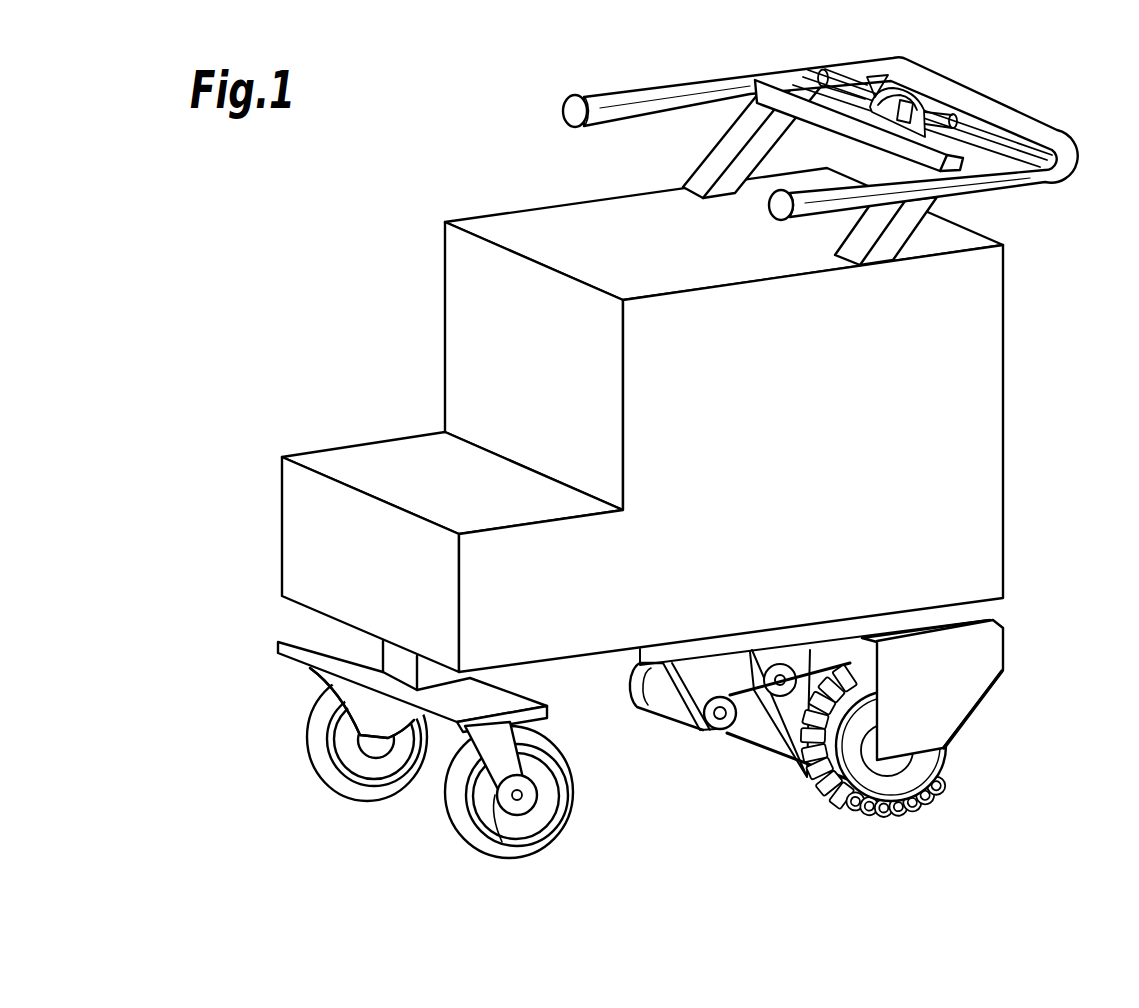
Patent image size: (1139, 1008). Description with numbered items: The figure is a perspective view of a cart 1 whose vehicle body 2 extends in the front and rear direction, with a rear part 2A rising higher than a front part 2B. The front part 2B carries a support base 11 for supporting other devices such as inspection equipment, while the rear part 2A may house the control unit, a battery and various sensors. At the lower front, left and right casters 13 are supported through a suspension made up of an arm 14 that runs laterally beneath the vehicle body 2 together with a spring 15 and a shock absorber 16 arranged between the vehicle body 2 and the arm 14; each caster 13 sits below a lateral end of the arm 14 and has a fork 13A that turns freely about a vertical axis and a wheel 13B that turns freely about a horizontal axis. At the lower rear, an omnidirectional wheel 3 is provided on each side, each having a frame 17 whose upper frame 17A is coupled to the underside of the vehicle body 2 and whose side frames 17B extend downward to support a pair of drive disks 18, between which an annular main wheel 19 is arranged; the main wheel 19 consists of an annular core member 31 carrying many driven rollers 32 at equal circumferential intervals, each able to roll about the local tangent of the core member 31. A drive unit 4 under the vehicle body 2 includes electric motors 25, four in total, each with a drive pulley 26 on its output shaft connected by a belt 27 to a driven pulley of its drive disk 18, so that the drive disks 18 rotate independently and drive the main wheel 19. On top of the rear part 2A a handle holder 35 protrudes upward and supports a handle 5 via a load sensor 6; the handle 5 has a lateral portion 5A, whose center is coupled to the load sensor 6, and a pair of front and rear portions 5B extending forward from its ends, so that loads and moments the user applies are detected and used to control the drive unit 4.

The cart 1 is at (467, 70).
The vehicle body 2 is at (1008, 428).
The rear part 2A is at (998, 318).
The front part 2B is at (317, 505).
The support base 11 is at (362, 452).
The handle 5 is at (728, 78).
The lateral portion 5A is at (1037, 127).
The front and rear portions 5B is at (683, 92).
The handle holder 35 is at (793, 103).
The load sensor 6 is at (897, 92).
The arm 14 is at (310, 642).
The spring 15 is at (367, 655).
The shock absorber 16 is at (362, 703).
The caster 13 is at (316, 784).
The fork 13A is at (498, 800).
The wheel 13B is at (543, 840).
The electric motor 25 is at (658, 700).
The drive pulley 26 is at (720, 730).
The drive unit 4 is at (725, 750).
The belt 27 is at (782, 760).
The omnidirectional wheel 3 is at (960, 781).
The frame 17 is at (1010, 650).
The upper frame 17A is at (983, 622).
The side frame 17B is at (963, 707).
The drive disk 18 is at (902, 783).
The main wheel 19 is at (830, 807).
The core member 31 is at (853, 813).
The driven roller 32 is at (880, 820).